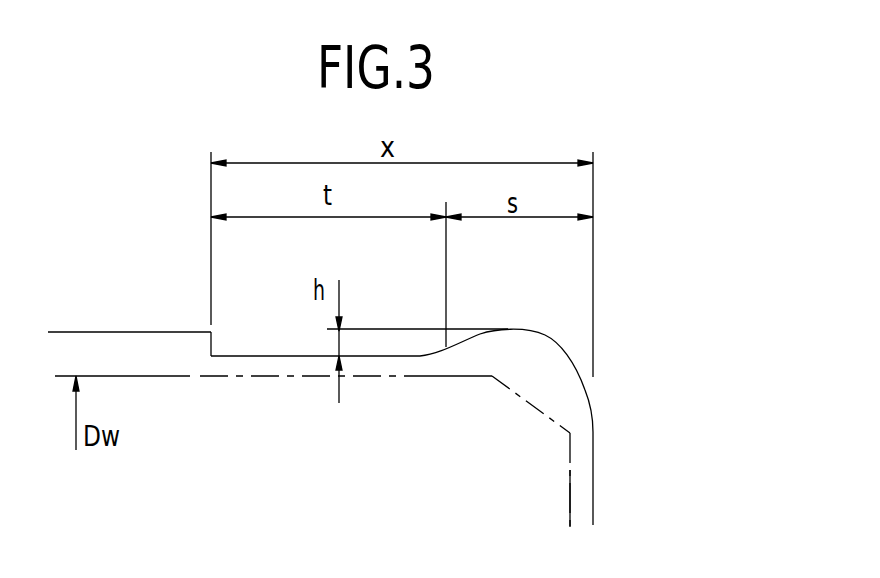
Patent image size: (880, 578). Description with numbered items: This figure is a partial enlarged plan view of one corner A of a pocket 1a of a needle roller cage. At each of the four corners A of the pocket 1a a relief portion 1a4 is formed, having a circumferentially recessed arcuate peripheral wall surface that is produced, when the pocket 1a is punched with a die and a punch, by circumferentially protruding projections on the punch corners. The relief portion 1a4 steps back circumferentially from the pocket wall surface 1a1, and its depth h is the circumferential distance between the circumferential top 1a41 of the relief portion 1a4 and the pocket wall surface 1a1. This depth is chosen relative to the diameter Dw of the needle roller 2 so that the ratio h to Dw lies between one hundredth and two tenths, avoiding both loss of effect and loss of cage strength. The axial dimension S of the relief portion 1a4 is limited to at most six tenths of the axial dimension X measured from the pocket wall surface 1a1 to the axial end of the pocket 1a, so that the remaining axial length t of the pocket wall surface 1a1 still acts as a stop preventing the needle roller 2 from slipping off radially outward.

The pocket 1a is at (246, 467).
The pocket wall surface 1a1 is at (268, 357).
The relief portion 1a4 is at (555, 343).
The circumferential top 1a41 is at (510, 329).
The needle roller 2 is at (581, 501).
The corner A is at (622, 341).